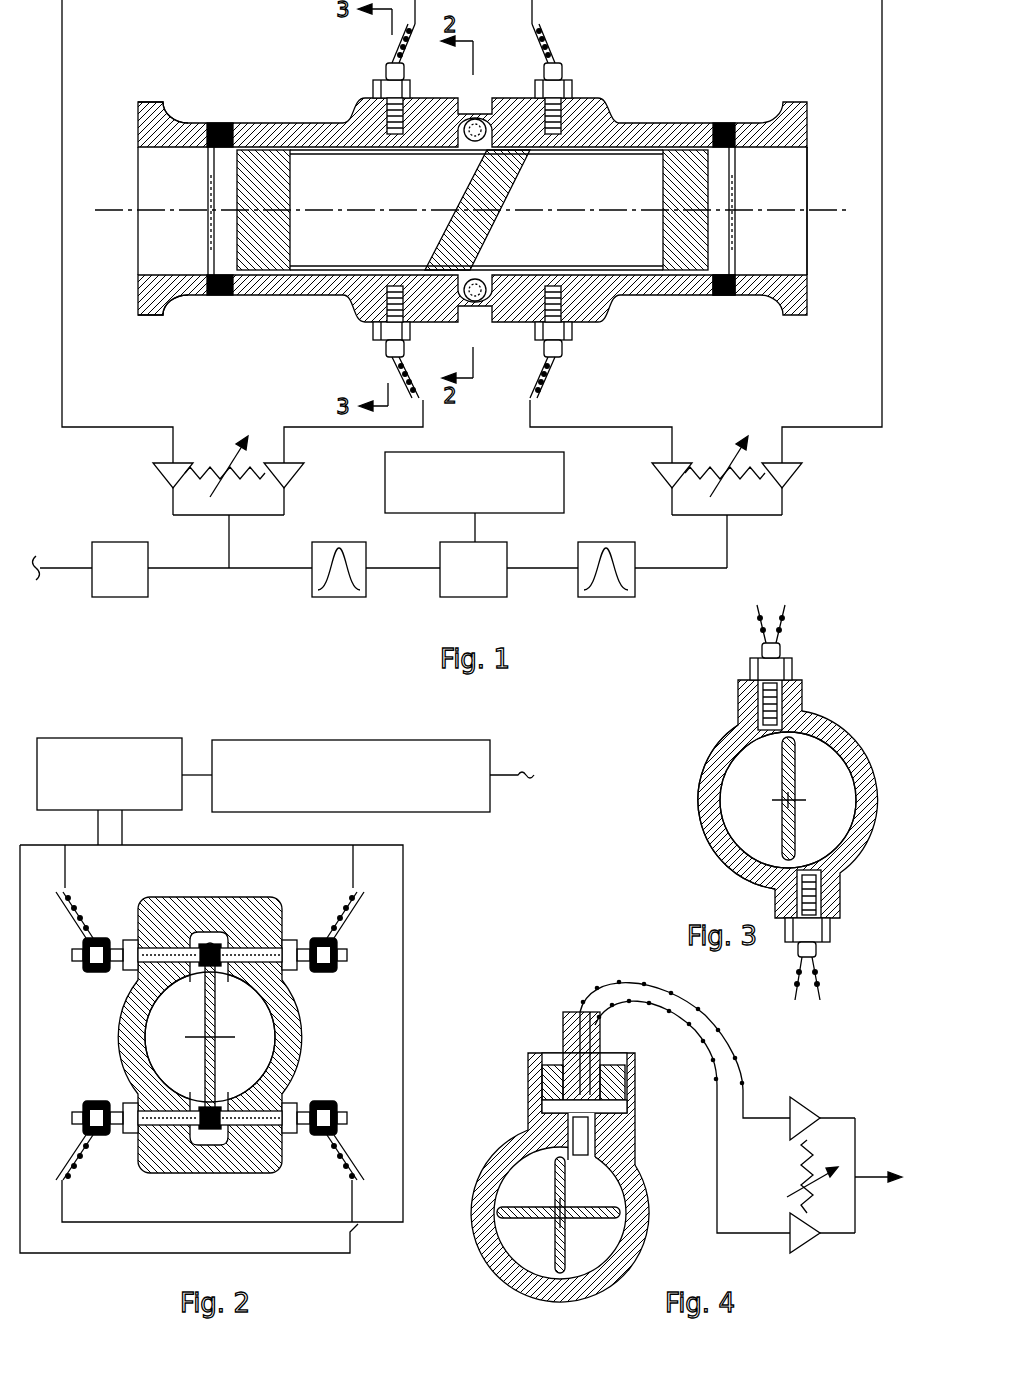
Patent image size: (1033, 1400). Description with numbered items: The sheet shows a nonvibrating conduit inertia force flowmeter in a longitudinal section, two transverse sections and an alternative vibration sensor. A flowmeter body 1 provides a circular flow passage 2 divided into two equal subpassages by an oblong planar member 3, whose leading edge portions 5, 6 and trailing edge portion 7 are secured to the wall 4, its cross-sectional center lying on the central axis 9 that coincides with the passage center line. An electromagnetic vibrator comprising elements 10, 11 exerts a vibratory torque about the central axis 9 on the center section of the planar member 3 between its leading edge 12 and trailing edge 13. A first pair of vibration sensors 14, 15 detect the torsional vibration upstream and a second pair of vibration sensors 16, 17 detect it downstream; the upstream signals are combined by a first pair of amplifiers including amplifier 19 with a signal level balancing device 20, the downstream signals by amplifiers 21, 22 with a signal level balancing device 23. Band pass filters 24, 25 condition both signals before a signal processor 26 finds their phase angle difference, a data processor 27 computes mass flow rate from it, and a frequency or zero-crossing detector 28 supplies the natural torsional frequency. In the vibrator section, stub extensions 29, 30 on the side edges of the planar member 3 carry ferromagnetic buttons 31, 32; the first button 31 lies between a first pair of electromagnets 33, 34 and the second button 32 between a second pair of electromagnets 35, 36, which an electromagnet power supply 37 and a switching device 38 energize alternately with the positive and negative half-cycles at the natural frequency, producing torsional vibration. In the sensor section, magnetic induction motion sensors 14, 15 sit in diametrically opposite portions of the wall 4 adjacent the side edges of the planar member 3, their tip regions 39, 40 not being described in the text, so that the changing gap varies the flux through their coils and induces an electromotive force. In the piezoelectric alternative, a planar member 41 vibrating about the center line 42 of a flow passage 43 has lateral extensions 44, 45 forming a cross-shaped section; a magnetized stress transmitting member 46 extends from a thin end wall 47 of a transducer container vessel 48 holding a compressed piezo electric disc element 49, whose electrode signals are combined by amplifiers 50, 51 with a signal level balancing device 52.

In FIG. 1, the flowmeter body 1 is at (197, 123).
In FIG. 2, the flowmeter body 1 is at (118, 1043).
In FIG. 3, the flowmeter body 1 is at (705, 795).
In FIG. 1, the flow passage 2 is at (178, 232).
In FIG. 2, the flow passage 2 is at (263, 1037).
In FIG. 3, the flow passage 2 is at (825, 737).
In FIG. 1, the planar member 3 is at (300, 250).
In FIG. 2, the planar member 3 is at (243, 1064).
In FIG. 3, the planar member 3 is at (755, 823).
In FIG. 1, the wall 4 is at (178, 160).
In FIG. 3, the wall 4 is at (752, 845).
In FIG. 1, the leading edge portion 5 is at (236, 147).
In FIG. 1, the leading edge portion 6 is at (208, 280).
In FIG. 1, the trailing edge portion 7 is at (743, 150).
In FIG. 1, the central axis 9 is at (790, 207).
In FIG. 2, the central axis 9 is at (233, 998).
In FIG. 3, the central axis 9 is at (780, 795).
In FIG. 1, the electromagnetic vibrator element 10 is at (488, 103).
In FIG. 1, the electromagnetic vibrator element 11 is at (488, 320).
In FIG. 1, the leading edge 12 is at (204, 258).
In FIG. 1, the trailing edge 13 is at (740, 243).
In FIG. 1, the vibration sensor 14 is at (372, 70).
In FIG. 3, the vibration sensor 14 is at (783, 650).
In FIG. 1, the vibration sensor 15 is at (372, 347).
In FIG. 3, the vibration sensor 15 is at (818, 953).
In FIG. 1, the vibration sensor 16 is at (575, 70).
In FIG. 1, the vibration sensor 17 is at (575, 347).
In FIG. 1, the amplifier 19 is at (300, 478).
In FIG. 1, the signal level balancing device 20 is at (222, 452).
In FIG. 1, the amplifier 21 is at (655, 478).
In FIG. 1, the amplifier 22 is at (800, 478).
In FIG. 1, the signal level balancing device 23 is at (712, 452).
In FIG. 1, the band pass filter 24 is at (312, 588).
In FIG. 1, the band pass filter 25 is at (578, 588).
In FIG. 1, the signal processor 26 is at (440, 588).
In FIG. 1, the data processor 27 is at (470, 452).
In FIG. 1, the frequency or zero-crossing detector 28 is at (150, 592).
In FIG. 2, the stub extension 29 is at (197, 978).
In FIG. 2, the stub extension 30 is at (197, 1092).
In FIG. 2, the ferromagnetic button 31 is at (216, 940).
In FIG. 2, the ferromagnetic button 32 is at (216, 1150).
In FIG. 2, the electromagnet 33 is at (72, 955).
In FIG. 2, the electromagnet 34 is at (347, 955).
In FIG. 2, the electromagnet 35 is at (72, 1118).
In FIG. 2, the electromagnet 36 is at (347, 1118).
In FIG. 2, the electromagnet power supply 37 is at (348, 740).
In FIG. 2, the switching device 38 is at (115, 738).
In FIG. 3, the bolt bore 39 is at (752, 740).
In FIG. 3, the bolt bore 40 is at (812, 835).
In FIG. 4, the planar member 41 is at (553, 1165).
In FIG. 4, the center line 42 is at (540, 1236).
In FIG. 4, the flow passage 43 is at (590, 1238).
In FIG. 4, the lateral extension 44 is at (510, 1203).
In FIG. 4, the lateral extension 45 is at (605, 1205).
In FIG. 4, the stress transmitting member 46 is at (597, 1150).
In FIG. 4, the thin end wall 47 is at (612, 1127).
In FIG. 4, the transducer container vessel 48 is at (553, 1030).
In FIG. 4, the piezo electric disc element 49 is at (545, 1085).
In FIG. 4, the amplifier 50 is at (815, 1105).
In FIG. 4, the amplifier 51 is at (815, 1250).
In FIG. 4, the signal level balancing device 52 is at (858, 1197).